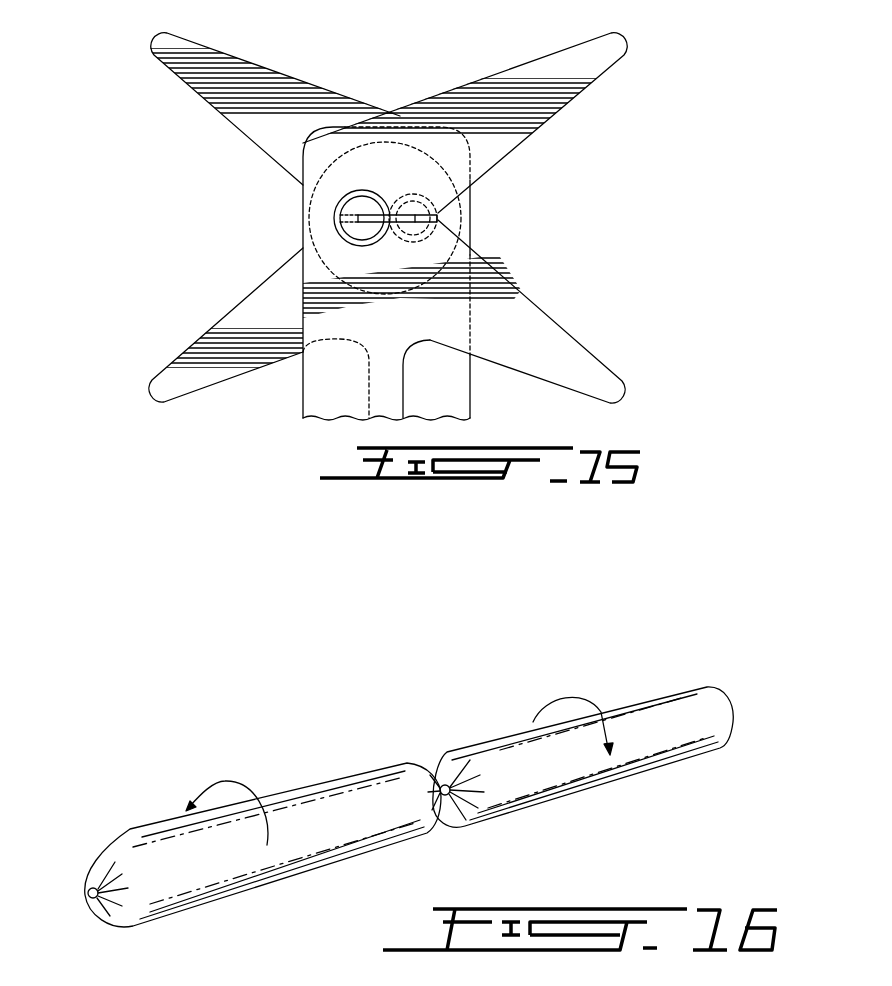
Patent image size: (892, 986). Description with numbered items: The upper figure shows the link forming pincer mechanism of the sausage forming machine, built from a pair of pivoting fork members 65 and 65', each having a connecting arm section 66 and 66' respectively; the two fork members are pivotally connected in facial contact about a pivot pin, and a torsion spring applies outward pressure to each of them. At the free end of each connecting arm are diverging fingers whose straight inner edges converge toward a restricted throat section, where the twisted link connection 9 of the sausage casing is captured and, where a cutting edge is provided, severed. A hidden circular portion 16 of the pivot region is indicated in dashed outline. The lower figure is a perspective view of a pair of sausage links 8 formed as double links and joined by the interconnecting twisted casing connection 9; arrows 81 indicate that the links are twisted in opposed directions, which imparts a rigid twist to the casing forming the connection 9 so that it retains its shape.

In FIG. 15, the twisted link connection 9 is at (360, 238).
In FIG. 16, the twisted link connection 9 is at (437, 788).
In FIG. 15, the hidden circular portion 16 is at (417, 142).
In FIG. 15, the pivoting fork member 65 is at (383, 217).
In FIG. 15, the pivoting fork member 65' is at (382, 205).
In FIG. 15, the connecting arm section 66 is at (471, 381).
In FIG. 15, the connecting arm section 66' is at (280, 391).
In FIG. 16, the sausage link 8 is at (343, 833).
In FIG. 16, the arrows (opposed twisting directions) 81 is at (245, 784).